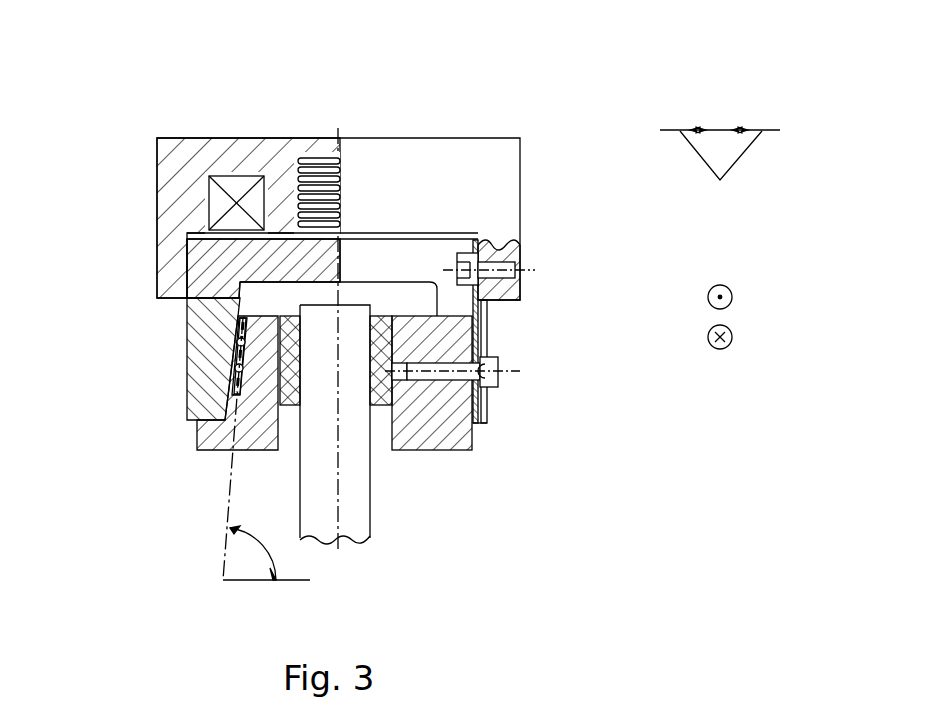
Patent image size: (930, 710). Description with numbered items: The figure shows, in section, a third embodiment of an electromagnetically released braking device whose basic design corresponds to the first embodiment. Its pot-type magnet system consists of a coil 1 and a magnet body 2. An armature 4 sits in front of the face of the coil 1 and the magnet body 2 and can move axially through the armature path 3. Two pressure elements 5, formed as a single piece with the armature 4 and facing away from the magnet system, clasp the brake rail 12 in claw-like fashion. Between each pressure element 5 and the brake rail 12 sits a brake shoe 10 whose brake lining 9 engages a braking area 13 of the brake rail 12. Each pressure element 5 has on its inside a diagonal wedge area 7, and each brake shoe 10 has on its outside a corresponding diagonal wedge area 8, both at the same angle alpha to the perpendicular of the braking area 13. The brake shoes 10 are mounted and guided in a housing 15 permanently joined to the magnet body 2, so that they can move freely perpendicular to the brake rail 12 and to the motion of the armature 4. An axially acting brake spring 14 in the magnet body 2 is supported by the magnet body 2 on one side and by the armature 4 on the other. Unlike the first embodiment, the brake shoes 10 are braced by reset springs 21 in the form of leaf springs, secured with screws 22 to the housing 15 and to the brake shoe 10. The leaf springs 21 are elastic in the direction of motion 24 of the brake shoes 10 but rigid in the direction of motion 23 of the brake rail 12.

The coil 1 is at (236, 191).
The magnet body 2 is at (276, 157).
The armature path 3 is at (207, 223).
The armature 4 is at (230, 255).
The pressure elements 5 is at (230, 337).
The diagonal wedge area 7 is at (197, 420).
The diagonal wedge area 8 is at (240, 415).
The brake linings 9 is at (237, 392).
The brake shoe 10 is at (458, 437).
The brake rail 12 is at (355, 515).
The braking areas 13 is at (300, 360).
The brake spring 14 is at (335, 192).
The housing 15 is at (513, 287).
The reset springs 21 is at (487, 325).
The screw 22 is at (515, 258).
The direction of motion of the brake rail 23 is at (732, 302).
The direction of motion of the brake shoes 24 is at (720, 177).